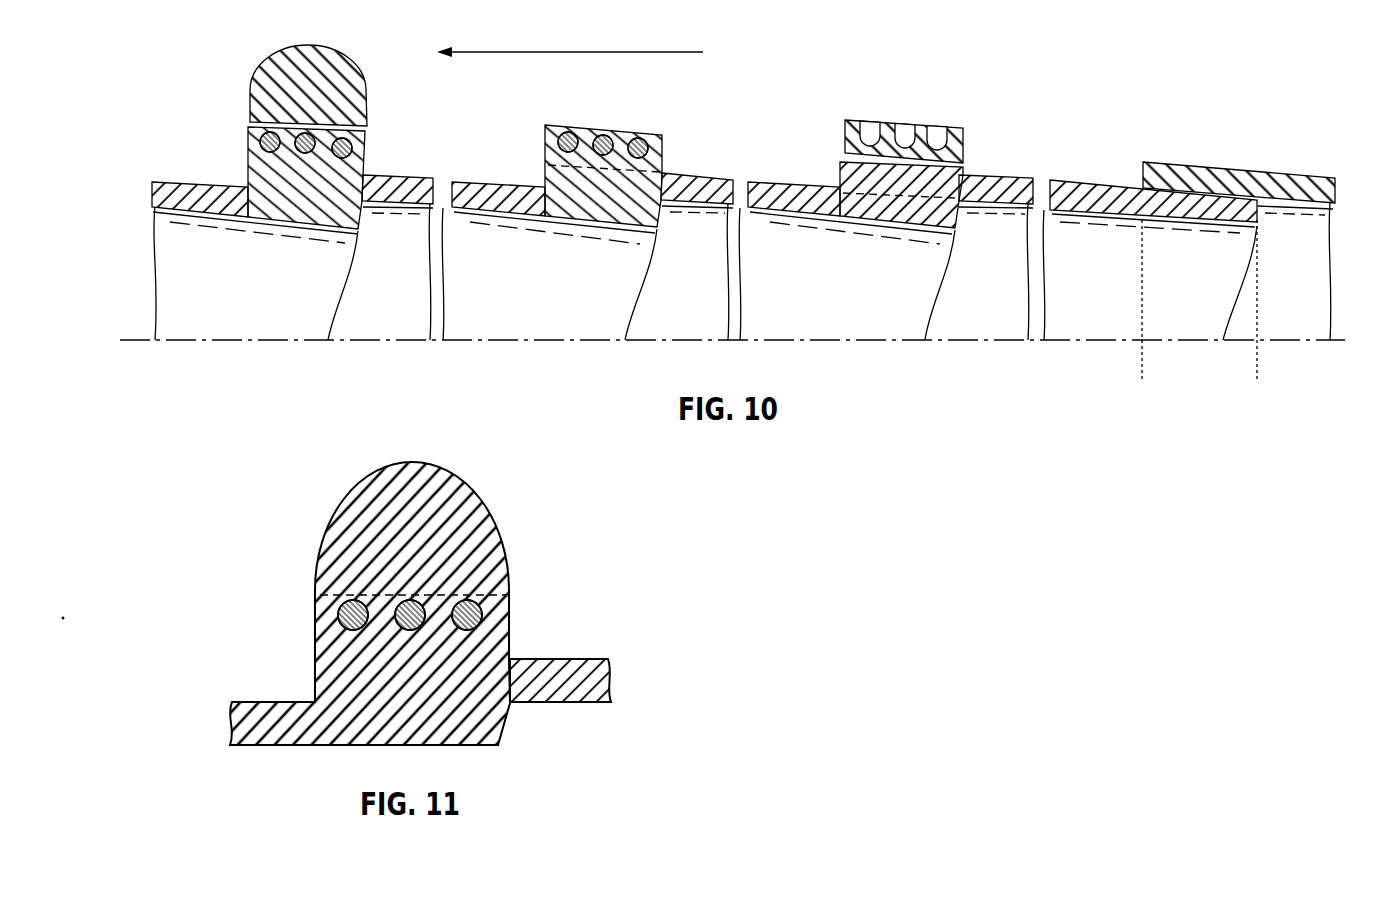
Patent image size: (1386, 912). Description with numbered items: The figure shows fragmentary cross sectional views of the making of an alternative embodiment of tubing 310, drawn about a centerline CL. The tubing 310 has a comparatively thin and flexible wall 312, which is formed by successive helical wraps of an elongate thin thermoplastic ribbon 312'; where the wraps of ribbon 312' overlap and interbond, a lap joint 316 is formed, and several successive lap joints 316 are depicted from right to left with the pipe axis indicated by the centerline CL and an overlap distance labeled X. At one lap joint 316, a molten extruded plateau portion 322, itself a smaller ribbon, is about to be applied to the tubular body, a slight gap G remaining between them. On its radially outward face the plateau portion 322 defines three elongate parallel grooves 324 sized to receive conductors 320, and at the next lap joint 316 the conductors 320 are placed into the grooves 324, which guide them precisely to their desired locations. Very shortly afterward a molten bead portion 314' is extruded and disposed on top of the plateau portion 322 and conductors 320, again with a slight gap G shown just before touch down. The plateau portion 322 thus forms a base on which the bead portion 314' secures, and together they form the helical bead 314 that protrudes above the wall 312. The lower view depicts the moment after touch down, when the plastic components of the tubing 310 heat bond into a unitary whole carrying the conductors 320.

In FIG. 10, the tubing 310 is at (340, 69).
In FIG. 11, the tubing 310 is at (390, 592).
In FIG. 10, the wall 312 is at (693, 169).
In FIG. 11, the wall 312 is at (418, 669).
In FIG. 10, the thermoplastic ribbon 312' is at (1239, 163).
In FIG. 11, the helical bead 314 is at (393, 595).
In FIG. 10, the bead portion 314' is at (304, 71).
In FIG. 10, the lap joint 316 is at (290, 252).
In FIG. 10, the conductors 320 is at (636, 138).
In FIG. 11, the conductors 320 is at (408, 598).
In FIG. 10, the plateau portion 322 is at (943, 113).
In FIG. 10, the grooves 324 is at (937, 125).
In FIG. 10, the gap G is at (238, 118).
In FIG. 10, the overlap distance X is at (1250, 362).
In FIG. 10, the centerline CL is at (202, 341).